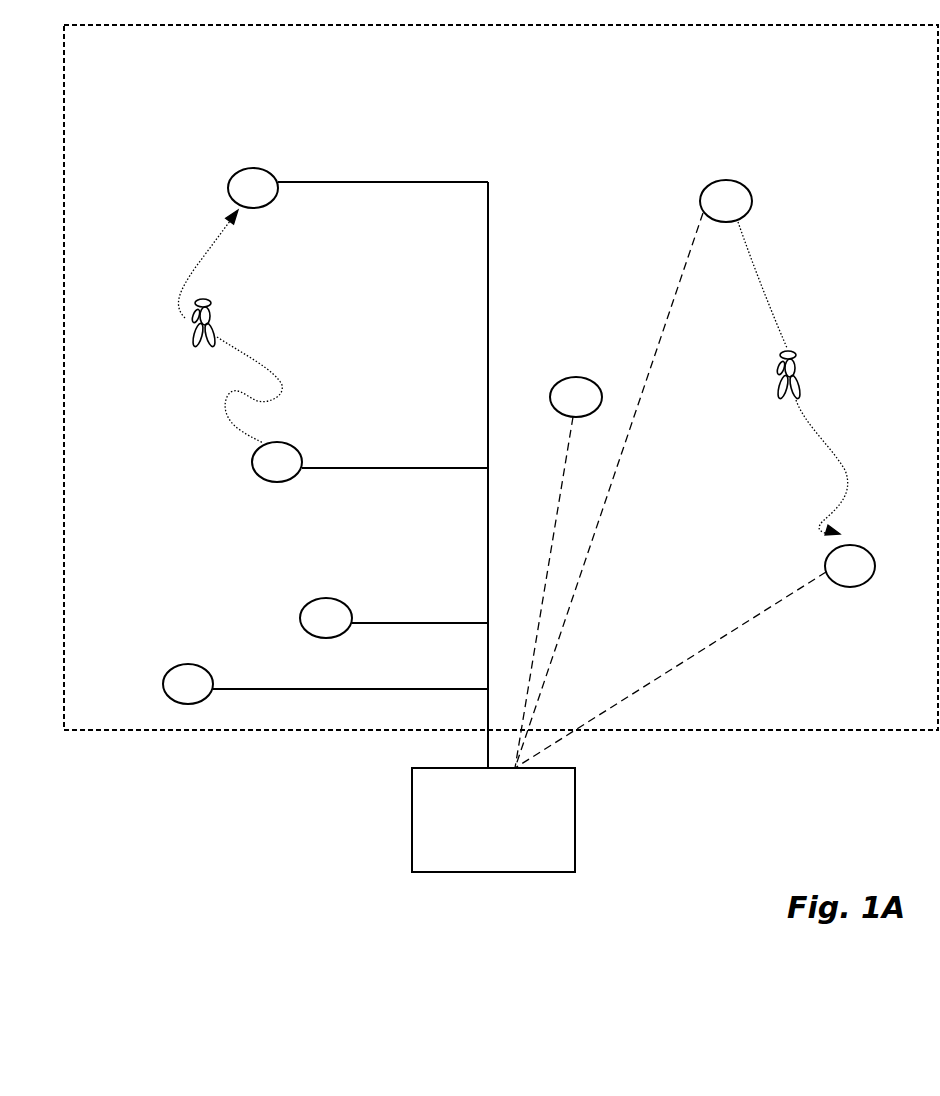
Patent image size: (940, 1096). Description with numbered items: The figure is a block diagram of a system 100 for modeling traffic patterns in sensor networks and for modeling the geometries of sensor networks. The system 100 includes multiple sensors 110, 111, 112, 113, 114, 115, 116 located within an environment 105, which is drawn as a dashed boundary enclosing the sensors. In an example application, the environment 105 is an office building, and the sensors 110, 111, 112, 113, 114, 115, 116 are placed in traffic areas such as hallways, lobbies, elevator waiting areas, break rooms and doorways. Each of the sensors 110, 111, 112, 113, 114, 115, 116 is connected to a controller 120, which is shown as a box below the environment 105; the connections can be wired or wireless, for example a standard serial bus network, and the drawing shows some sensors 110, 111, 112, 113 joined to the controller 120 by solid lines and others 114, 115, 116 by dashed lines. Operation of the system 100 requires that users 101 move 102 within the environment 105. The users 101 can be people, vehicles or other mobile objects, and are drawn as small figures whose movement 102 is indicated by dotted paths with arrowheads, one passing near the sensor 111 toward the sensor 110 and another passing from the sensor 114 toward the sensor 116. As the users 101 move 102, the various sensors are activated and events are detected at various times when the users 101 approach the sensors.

The system 100 is at (233, 843).
The user 101 is at (203, 300).
The movement 102 is at (192, 275).
The environment 105 is at (812, 729).
The sensor 110 is at (248, 170).
The sensor 111 is at (288, 480).
The sensor 112 is at (328, 599).
The sensor 113 is at (177, 665).
The sensor 114 is at (752, 193).
The sensor 115 is at (601, 388).
The sensor 116 is at (862, 586).
The controller 120 is at (575, 828).